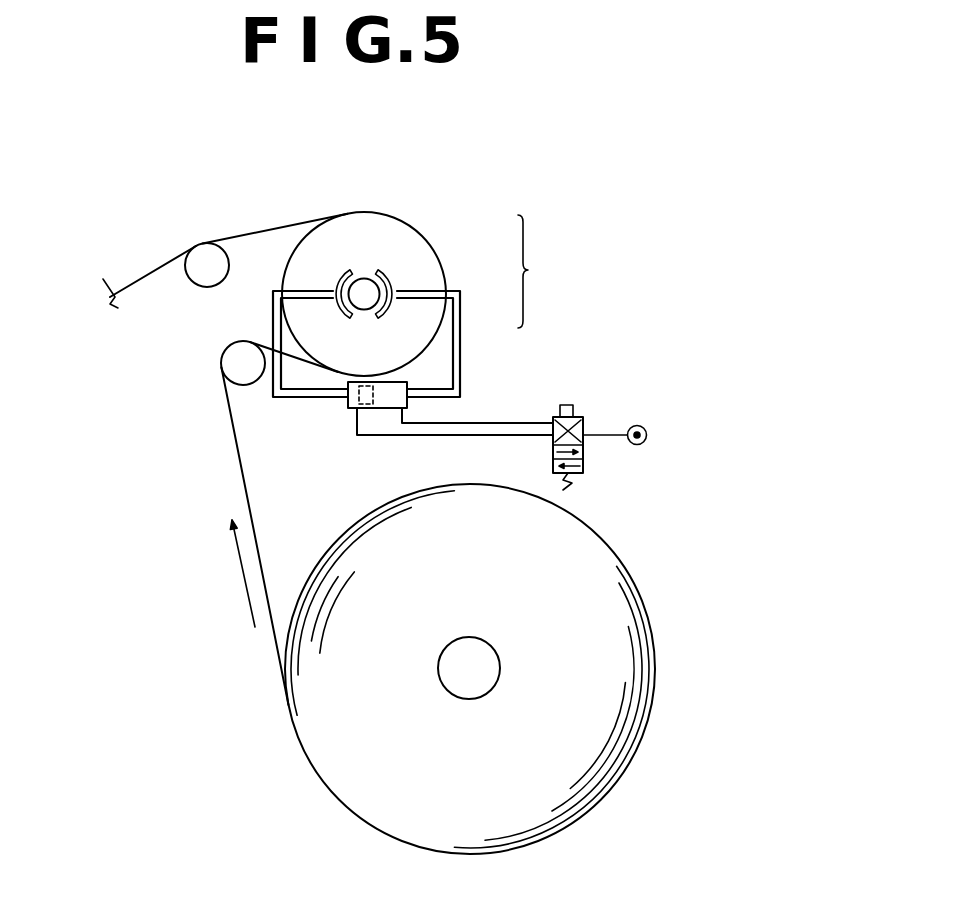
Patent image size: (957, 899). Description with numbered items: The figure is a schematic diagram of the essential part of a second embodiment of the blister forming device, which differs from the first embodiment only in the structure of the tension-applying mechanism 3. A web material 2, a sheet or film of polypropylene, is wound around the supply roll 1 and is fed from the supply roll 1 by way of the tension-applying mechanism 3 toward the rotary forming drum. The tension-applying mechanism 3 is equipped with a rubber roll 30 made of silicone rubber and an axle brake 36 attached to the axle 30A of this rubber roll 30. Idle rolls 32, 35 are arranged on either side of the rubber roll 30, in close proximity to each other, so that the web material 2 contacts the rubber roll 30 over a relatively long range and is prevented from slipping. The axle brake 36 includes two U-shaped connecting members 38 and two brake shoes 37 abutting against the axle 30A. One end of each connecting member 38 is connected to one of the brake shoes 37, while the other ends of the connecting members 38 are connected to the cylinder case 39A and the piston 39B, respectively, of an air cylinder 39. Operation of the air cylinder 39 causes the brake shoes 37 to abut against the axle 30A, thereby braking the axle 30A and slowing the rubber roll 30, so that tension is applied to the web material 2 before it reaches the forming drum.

The supply roll 1 is at (453, 680).
The web material 2 is at (248, 490).
The tension-applying mechanism 3 is at (357, 211).
The rubber roll 30 is at (420, 241).
The axle 30A is at (360, 286).
The idle roll 32 is at (236, 358).
The idle roll 35 is at (201, 272).
The axle brake 36 is at (542, 271).
The brake shoes 37 is at (336, 277).
The U-shaped connecting members 38 is at (273, 322).
The air cylinder 39 is at (412, 378).
The cylinder case 39A is at (407, 406).
The piston 39B is at (350, 412).